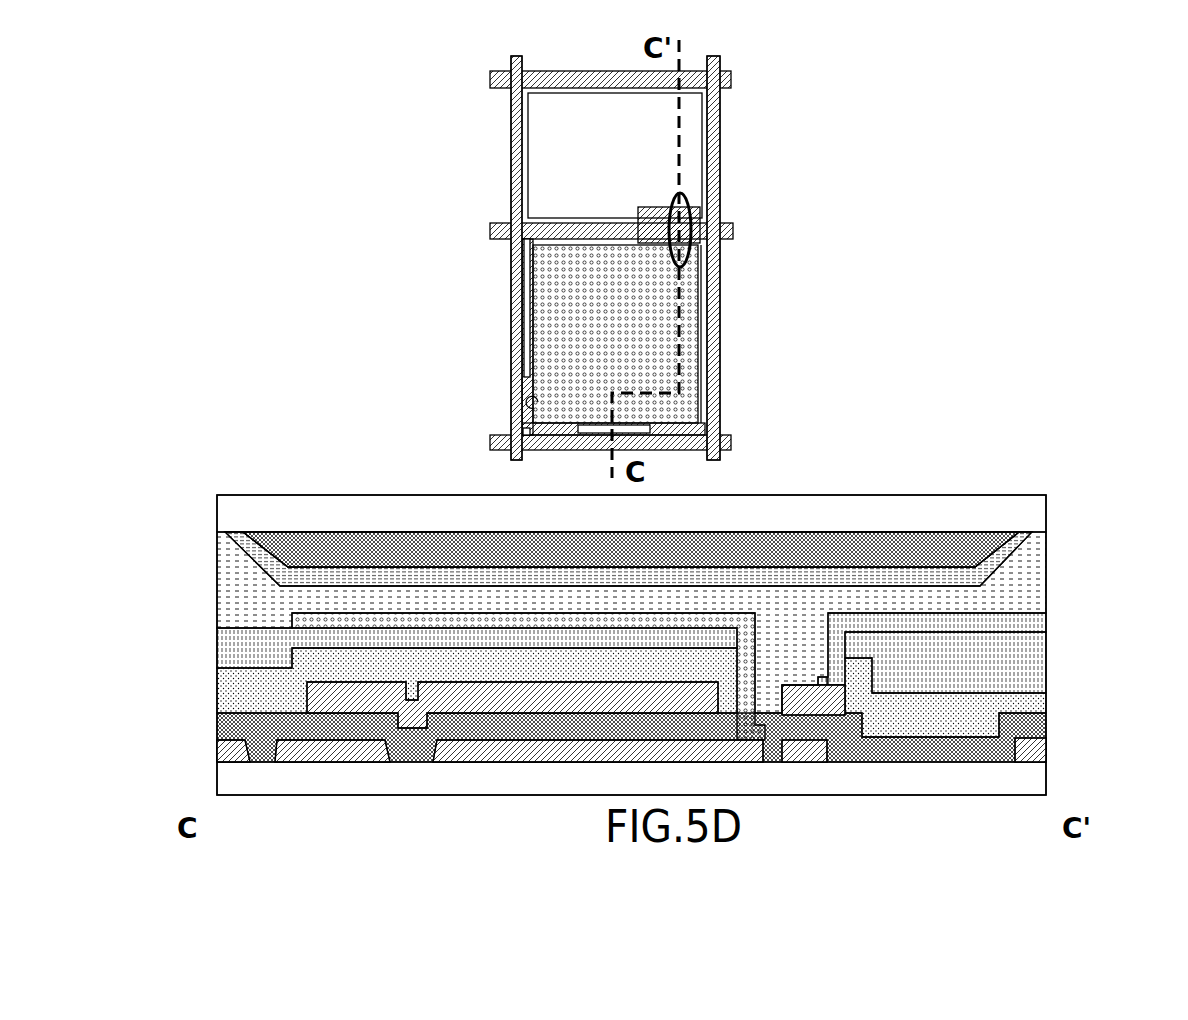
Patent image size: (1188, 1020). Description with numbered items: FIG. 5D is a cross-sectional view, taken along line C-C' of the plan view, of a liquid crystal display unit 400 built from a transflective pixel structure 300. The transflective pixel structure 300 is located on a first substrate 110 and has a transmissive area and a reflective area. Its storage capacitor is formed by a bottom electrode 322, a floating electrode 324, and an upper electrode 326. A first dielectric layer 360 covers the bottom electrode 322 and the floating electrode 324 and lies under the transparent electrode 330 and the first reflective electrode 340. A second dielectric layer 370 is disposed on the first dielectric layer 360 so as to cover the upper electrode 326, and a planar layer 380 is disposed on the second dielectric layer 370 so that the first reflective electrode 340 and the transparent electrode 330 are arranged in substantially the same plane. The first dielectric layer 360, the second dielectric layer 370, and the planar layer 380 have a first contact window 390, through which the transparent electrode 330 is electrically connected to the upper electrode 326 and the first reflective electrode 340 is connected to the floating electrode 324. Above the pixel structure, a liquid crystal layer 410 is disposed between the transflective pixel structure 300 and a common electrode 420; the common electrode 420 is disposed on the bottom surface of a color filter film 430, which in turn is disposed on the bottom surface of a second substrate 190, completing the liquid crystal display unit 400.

The first substrate 110 is at (280, 778).
The second substrate 190 is at (336, 514).
The transflective pixel structure 300 is at (465, 440).
The bottom electrode 322 is at (335, 745).
The floating electrode 324 is at (713, 752).
The upper electrode 326 is at (610, 694).
The transparent electrode 330 is at (548, 154).
The first reflective electrode 340 is at (558, 312).
The first dielectric layer 360 is at (1018, 728).
The second dielectric layer 370 is at (1005, 702).
The planar layer 380 is at (1005, 648).
The first contact window 390 is at (690, 210).
The liquid crystal display unit 400 is at (303, 842).
The liquid crystal layer 410 is at (1032, 562).
The common electrode 420 is at (298, 575).
The color filter film 430 is at (325, 545).